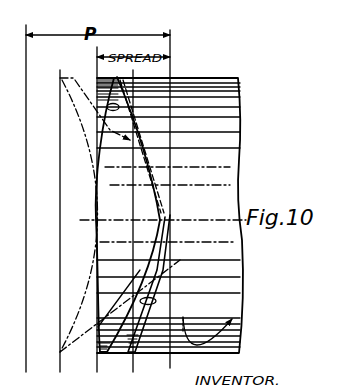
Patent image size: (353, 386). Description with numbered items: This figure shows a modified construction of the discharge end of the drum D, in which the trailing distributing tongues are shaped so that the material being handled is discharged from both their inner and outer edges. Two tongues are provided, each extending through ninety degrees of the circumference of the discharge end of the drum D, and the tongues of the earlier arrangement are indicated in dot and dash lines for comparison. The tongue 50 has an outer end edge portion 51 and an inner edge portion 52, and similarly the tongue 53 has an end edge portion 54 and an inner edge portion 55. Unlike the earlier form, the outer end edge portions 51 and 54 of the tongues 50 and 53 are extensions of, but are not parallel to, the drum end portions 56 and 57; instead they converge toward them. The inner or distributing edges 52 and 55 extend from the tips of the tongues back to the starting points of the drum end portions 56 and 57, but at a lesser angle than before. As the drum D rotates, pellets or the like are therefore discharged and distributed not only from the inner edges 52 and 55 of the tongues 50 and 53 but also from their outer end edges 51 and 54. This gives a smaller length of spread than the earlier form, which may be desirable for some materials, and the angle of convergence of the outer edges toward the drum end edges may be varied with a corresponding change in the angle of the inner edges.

The drum D is at (210, 76).
The tongue 50 is at (110, 243).
The outer end edge portion 51 is at (97, 305).
The inner edge portion 52 is at (143, 287).
The tongue 53 is at (100, 134).
The end edge portion 54 is at (98, 112).
The inner edge portion 55 is at (125, 89).
The drum end portion 56 is at (160, 302).
The drum end portion 57 is at (118, 106).